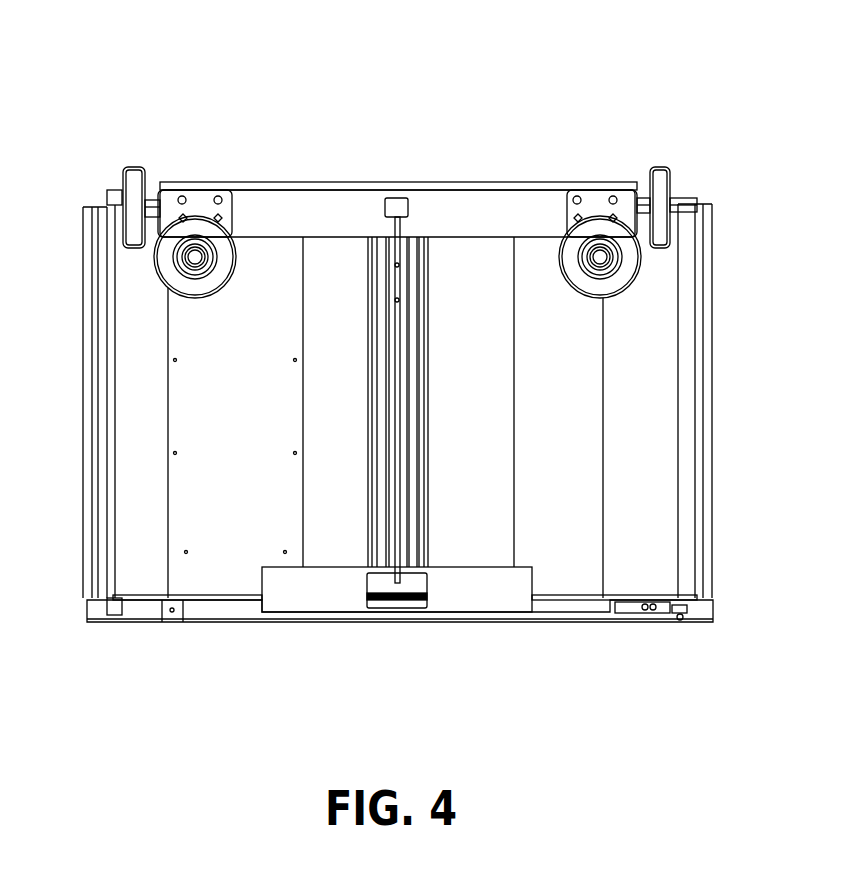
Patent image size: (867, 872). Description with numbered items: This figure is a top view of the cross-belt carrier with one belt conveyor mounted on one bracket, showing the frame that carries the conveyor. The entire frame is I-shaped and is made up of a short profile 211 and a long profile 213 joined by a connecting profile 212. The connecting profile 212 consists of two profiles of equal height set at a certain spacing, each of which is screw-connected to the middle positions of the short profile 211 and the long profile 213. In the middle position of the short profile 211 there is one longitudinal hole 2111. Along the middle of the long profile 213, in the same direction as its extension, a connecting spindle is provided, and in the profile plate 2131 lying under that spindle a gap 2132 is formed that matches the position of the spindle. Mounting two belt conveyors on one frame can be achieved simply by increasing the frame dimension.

The short profile 211 is at (470, 597).
The longitudinal hole 2111 is at (382, 580).
The connecting profile 212 is at (375, 265).
The long profile 213 is at (569, 193).
The profile plate 2131 is at (453, 215).
The gap 2132 is at (391, 197).